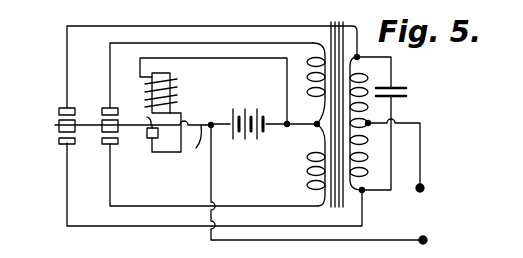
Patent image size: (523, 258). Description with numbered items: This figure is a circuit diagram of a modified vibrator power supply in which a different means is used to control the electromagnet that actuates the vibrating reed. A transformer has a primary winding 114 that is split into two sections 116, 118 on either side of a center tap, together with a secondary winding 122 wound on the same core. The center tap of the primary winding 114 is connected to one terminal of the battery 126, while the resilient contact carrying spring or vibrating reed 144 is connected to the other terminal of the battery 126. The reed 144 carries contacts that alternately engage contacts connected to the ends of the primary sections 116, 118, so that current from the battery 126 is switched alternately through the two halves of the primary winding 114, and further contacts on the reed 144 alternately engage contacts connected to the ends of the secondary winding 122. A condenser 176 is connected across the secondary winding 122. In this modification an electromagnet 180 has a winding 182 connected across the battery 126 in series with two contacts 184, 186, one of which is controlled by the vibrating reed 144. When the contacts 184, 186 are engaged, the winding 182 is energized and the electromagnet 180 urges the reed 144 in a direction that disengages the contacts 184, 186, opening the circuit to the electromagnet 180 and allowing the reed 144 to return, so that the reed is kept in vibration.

The primary winding 114 is at (333, 18).
The primary winding section 116 is at (307, 78).
The primary winding section 118 is at (310, 167).
The secondary winding 122 is at (365, 180).
The battery 126 is at (240, 141).
The vibrating reed 144 is at (197, 148).
The condenser 176 is at (407, 89).
The electromagnet 180 is at (170, 73).
The winding 182 is at (171, 94).
The contact 184 is at (149, 139).
The contact 186 is at (136, 116).